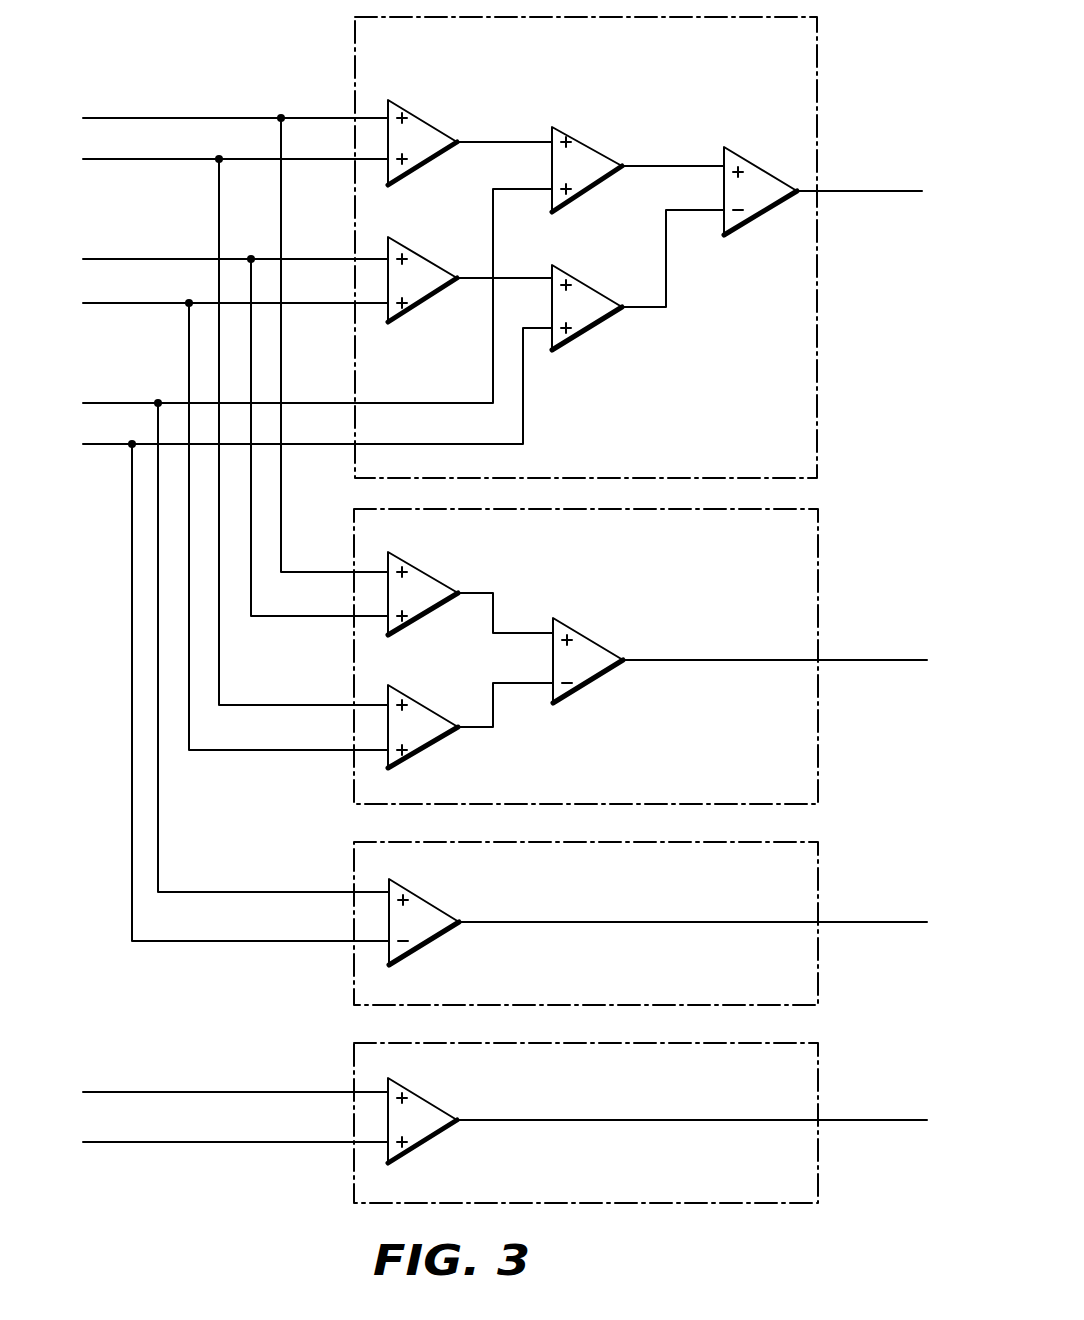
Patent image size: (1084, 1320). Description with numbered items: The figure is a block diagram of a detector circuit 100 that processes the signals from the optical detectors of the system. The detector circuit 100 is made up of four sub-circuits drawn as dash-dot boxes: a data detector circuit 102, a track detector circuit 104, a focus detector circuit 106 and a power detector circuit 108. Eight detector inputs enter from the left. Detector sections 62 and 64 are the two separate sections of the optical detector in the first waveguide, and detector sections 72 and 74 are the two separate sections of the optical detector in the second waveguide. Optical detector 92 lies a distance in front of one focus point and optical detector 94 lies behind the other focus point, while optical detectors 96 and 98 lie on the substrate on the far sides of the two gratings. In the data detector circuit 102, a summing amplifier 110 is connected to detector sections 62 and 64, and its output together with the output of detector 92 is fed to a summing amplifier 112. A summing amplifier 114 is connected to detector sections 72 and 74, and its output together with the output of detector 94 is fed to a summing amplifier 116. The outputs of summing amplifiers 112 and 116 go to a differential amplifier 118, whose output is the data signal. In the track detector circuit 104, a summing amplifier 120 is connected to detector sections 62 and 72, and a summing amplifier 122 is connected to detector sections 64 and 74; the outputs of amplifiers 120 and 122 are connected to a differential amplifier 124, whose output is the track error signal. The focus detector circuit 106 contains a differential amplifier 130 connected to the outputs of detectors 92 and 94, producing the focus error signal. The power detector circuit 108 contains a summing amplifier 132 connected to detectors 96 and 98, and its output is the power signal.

The detector section 62 is at (119, 117).
The detector section 64 is at (119, 158).
The detector section 72 is at (121, 258).
The detector section 74 is at (122, 302).
The optical detector 92 is at (123, 402).
The optical detector 94 is at (123, 444).
The optical detector 96 is at (124, 1089).
The optical detector 98 is at (124, 1139).
The detector circuit 100 is at (303, 1226).
The data detector circuit 102 is at (818, 37).
The track detector circuit 104 is at (819, 524).
The focus detector circuit 106 is at (819, 876).
The power detector circuit 108 is at (819, 1089).
The summing amplifier 110 is at (439, 128).
The summing amplifier 112 is at (583, 138).
The summing amplifier 114 is at (433, 262).
The summing amplifier 116 is at (590, 286).
The differential amplifier 118 is at (768, 172).
The summing amplifier 120 is at (445, 583).
The summing amplifier 122 is at (430, 712).
The differential amplifier 124 is at (598, 644).
The differential amplifier 130 is at (448, 914).
The summing amplifier 132 is at (453, 1114).